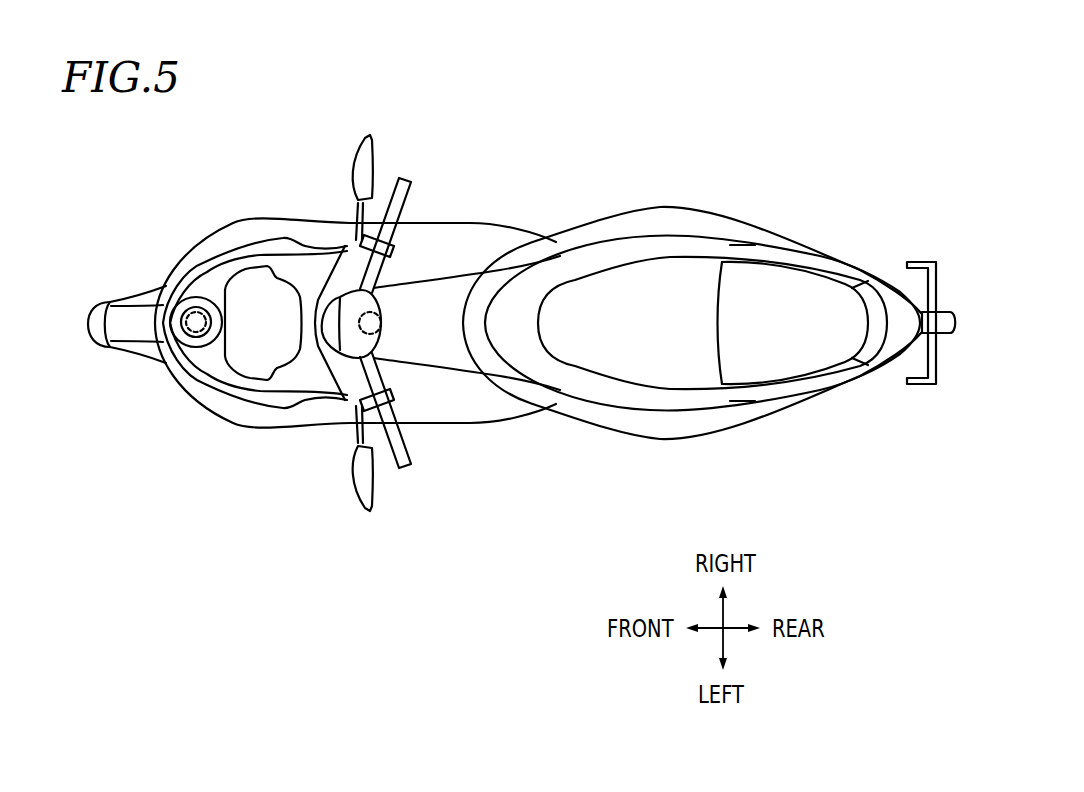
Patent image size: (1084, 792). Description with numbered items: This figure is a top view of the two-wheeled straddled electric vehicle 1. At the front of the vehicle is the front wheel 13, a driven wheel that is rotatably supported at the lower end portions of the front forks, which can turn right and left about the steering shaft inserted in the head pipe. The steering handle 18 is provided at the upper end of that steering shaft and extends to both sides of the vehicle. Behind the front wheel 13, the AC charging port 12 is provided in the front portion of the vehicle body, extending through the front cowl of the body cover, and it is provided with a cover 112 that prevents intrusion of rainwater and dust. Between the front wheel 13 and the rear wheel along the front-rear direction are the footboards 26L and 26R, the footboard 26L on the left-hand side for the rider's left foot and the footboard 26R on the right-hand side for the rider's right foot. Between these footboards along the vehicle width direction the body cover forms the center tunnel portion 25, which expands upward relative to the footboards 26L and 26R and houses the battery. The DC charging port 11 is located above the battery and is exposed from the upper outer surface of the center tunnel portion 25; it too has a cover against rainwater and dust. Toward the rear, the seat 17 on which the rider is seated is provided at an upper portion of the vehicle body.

The straddled electric vehicle 1 is at (663, 89).
The DC charging port 11 is at (378, 331).
The AC charging port 12 is at (192, 310).
The cover 112 is at (190, 340).
The front wheel 13 is at (107, 302).
The seat 17 is at (682, 287).
The steering handle 18 is at (347, 248).
The center tunnel portion 25 is at (420, 317).
The footboard 26R is at (427, 253).
The footboard 26L is at (437, 400).